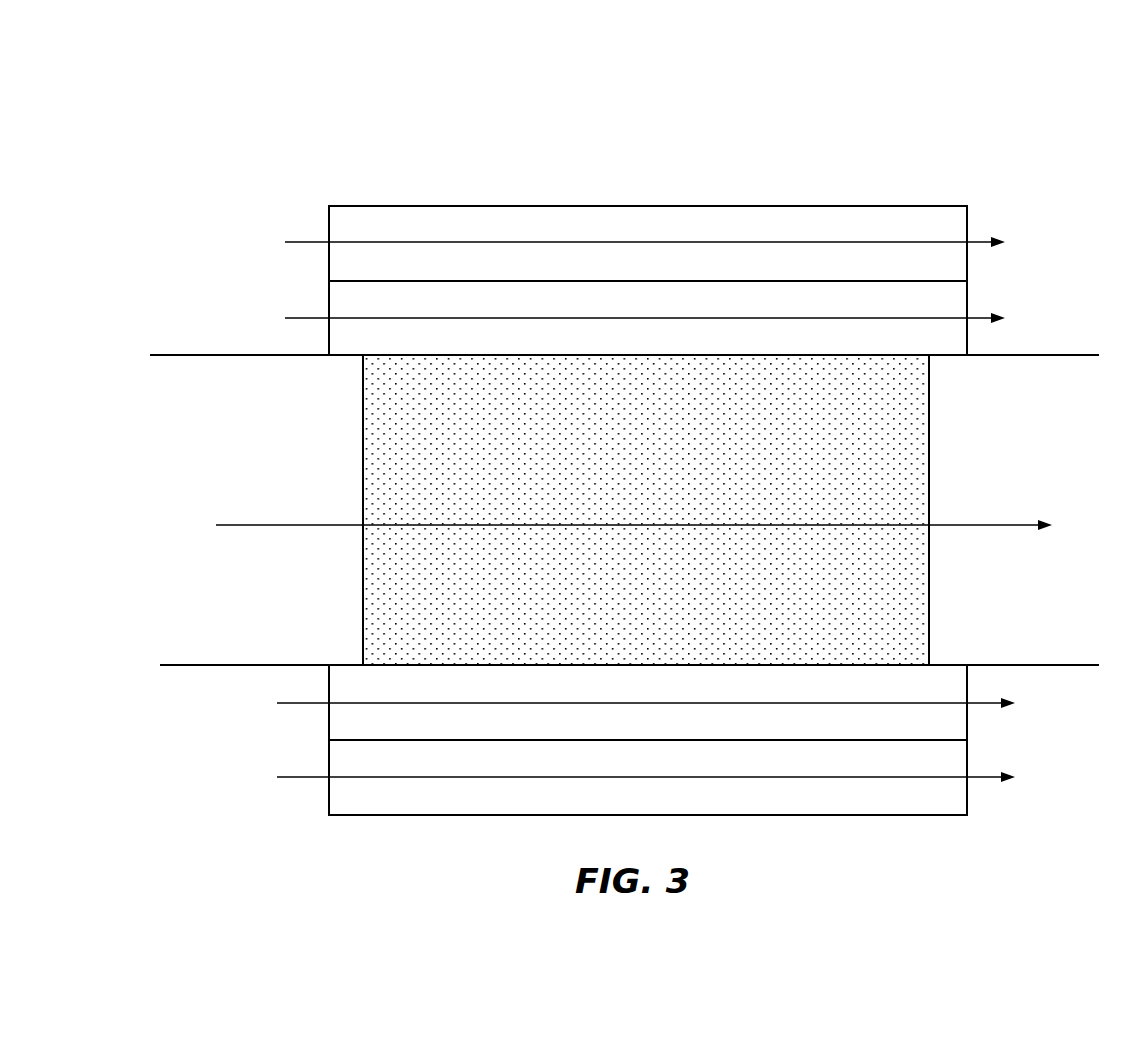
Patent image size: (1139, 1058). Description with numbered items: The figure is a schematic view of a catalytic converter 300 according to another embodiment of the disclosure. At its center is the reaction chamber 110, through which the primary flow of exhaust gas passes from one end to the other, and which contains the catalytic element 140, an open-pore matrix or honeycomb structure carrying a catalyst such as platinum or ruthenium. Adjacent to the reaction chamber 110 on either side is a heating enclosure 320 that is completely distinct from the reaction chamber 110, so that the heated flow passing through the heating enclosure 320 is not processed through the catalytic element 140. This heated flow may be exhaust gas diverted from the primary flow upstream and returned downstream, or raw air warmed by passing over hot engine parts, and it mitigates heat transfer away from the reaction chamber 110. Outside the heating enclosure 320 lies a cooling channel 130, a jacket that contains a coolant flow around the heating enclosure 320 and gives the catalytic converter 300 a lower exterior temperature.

The catalytic converter 300 is at (861, 140).
The reaction chamber 110 is at (305, 385).
The cooling channel 130 is at (338, 220).
The heating enclosure 320 is at (338, 294).
The catalytic element 140 is at (382, 459).